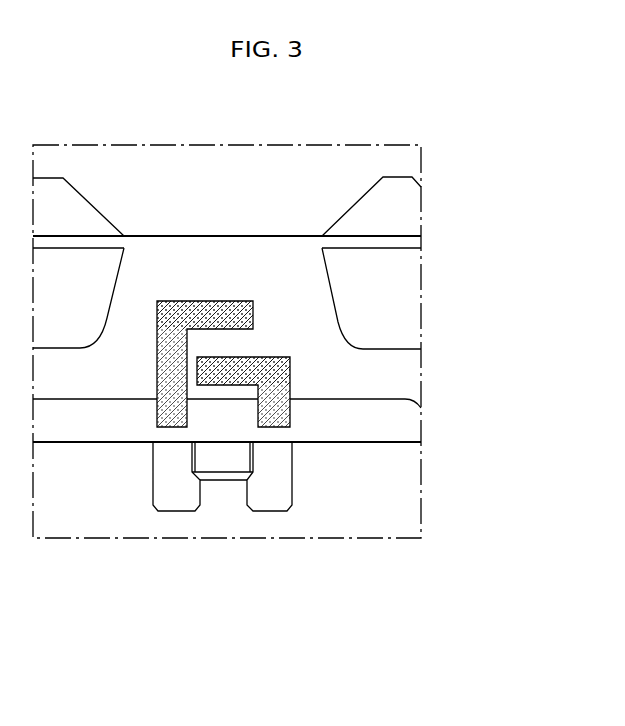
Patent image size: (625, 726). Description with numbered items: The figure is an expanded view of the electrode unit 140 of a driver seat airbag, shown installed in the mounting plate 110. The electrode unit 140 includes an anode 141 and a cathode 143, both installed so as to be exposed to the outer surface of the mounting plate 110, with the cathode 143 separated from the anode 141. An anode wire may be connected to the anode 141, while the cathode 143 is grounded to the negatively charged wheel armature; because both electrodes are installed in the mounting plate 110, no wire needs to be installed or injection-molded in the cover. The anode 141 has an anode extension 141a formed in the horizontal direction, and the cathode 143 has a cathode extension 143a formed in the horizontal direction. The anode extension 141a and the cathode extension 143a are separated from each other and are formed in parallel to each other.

The mounting plate 110 is at (292, 203).
The electrode unit 140 is at (319, 373).
The anode 141 is at (200, 355).
The anode extension 141a is at (218, 312).
The cathode 143 is at (343, 462).
The cathode extension 143a is at (230, 372).